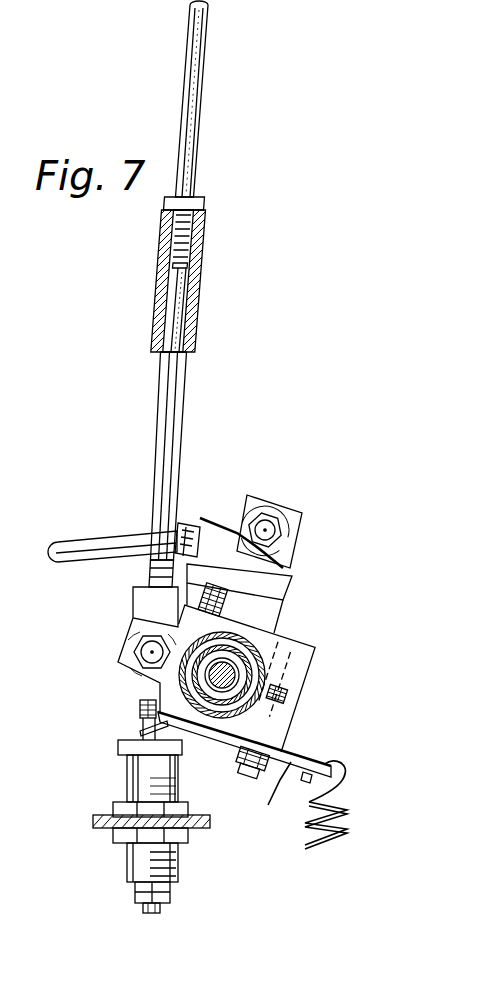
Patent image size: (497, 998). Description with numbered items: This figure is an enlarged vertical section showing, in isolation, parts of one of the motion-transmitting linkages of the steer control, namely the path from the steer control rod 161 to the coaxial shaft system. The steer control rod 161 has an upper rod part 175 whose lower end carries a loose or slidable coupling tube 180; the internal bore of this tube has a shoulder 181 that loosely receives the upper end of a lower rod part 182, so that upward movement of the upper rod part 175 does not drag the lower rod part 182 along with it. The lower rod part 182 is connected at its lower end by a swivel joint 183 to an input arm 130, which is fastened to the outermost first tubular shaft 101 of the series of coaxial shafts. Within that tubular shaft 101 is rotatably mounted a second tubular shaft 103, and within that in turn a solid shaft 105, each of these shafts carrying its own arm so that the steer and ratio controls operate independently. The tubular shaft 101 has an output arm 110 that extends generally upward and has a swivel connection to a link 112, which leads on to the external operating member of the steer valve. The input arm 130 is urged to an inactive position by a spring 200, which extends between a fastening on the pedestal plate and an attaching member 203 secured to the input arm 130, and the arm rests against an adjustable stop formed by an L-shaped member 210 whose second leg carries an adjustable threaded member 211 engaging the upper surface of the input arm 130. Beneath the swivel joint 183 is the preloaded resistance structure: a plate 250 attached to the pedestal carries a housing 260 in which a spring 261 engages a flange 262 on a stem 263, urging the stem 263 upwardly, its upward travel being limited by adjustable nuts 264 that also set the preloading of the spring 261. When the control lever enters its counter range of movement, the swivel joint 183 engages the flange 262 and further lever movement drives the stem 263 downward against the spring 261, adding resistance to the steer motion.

The upper rod part 175 is at (200, 55).
The steer control rod 161 is at (206, 125).
The slidable coupling tube 180 is at (200, 248).
The shoulder 181 is at (183, 288).
The lower rod part 182 is at (170, 429).
The adjustable threaded member 211 is at (232, 522).
The output arm 110 is at (296, 517).
The link 112 is at (73, 548).
The L-shaped member 210 is at (287, 576).
The input arm 130 is at (290, 657).
The swivel joint 183 is at (125, 661).
The solid shaft 105 is at (232, 674).
The second tubular shaft 103 is at (240, 690).
The first tubular shaft 101 is at (217, 718).
The attaching member 203 is at (268, 800).
The spring 200 is at (343, 830).
The flange 262 is at (137, 703).
The spring 261 is at (140, 729).
The housing 260 is at (143, 781).
The plate 250 is at (100, 828).
The adjustable nuts 264 is at (137, 897).
The stem 263 is at (157, 907).